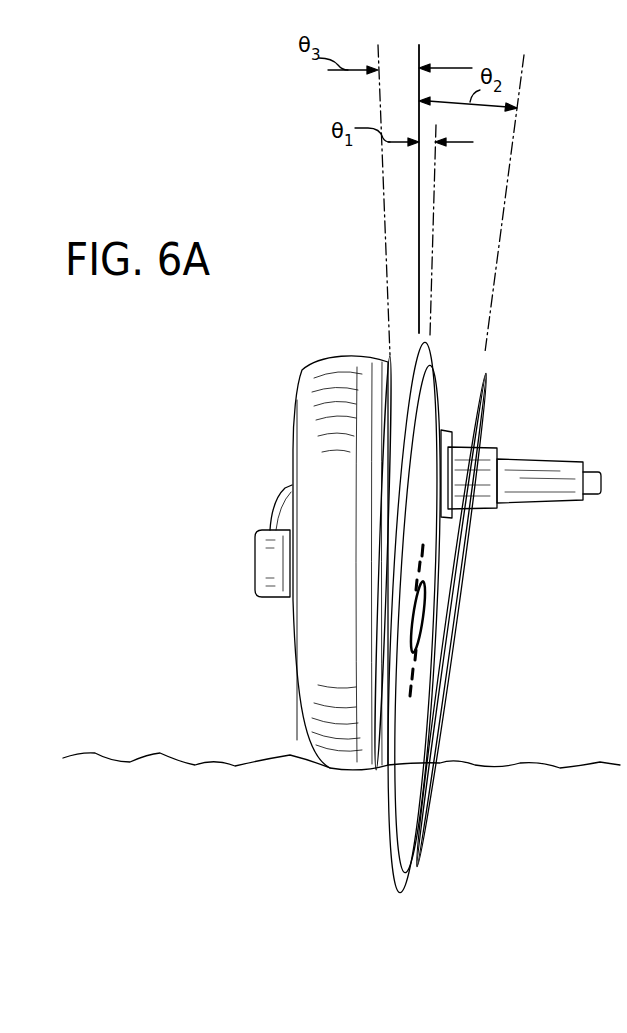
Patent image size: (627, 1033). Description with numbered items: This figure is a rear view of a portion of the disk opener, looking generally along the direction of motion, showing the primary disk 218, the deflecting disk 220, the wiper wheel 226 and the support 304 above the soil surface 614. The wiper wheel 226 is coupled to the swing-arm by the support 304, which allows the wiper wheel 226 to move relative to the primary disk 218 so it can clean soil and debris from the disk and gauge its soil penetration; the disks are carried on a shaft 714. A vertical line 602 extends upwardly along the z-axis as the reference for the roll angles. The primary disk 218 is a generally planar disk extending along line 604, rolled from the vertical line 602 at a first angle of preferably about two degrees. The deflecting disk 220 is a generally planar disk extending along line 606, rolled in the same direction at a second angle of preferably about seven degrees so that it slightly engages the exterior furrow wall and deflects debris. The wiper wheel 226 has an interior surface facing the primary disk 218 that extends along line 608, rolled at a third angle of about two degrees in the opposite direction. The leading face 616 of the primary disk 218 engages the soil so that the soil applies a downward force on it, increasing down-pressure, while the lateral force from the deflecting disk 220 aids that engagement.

The vertical line 602 is at (418, 83).
The line 604 is at (436, 200).
The line 606 is at (512, 236).
The line 608 is at (382, 208).
The surface 614 is at (160, 756).
The leading face 616 is at (397, 358).
The wiper wheel 226 is at (315, 466).
The support 304 is at (266, 560).
The primary disk 218 is at (407, 812).
The deflecting disk 220 is at (437, 737).
The shaft 714 is at (556, 462).